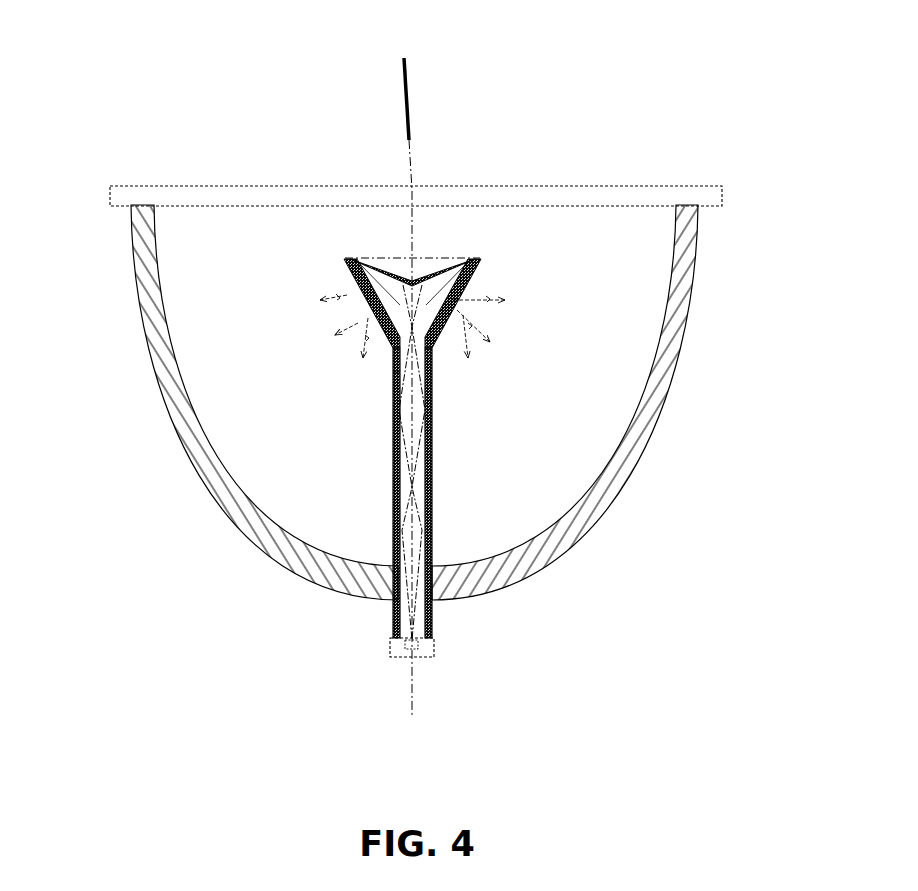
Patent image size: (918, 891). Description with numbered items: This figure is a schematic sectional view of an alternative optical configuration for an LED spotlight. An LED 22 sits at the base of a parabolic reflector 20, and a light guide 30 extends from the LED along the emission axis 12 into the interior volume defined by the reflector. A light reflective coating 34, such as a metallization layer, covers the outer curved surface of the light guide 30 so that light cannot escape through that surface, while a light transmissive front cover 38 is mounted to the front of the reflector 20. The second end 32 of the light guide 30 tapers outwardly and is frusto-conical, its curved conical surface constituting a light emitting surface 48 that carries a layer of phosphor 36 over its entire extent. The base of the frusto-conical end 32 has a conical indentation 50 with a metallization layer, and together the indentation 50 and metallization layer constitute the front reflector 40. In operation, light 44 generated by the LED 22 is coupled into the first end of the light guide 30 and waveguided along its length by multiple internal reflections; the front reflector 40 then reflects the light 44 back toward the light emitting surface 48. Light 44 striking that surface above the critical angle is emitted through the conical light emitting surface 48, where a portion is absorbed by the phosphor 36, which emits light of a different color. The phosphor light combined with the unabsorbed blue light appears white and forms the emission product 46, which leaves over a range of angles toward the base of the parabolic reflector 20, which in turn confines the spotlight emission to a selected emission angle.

The emission axis 12 is at (405, 366).
The parabolic reflector 20 is at (636, 448).
The LED 22 is at (423, 646).
The light guide 30 is at (400, 563).
The second (light emitting) end 32 is at (407, 312).
The light reflective coating 34 is at (395, 372).
The phosphor 36 is at (355, 285).
The front cover 38 is at (660, 187).
The front reflector 40 is at (386, 296).
The light 44 is at (405, 453).
The emission product 46 is at (343, 328).
The light emitting surface 48 is at (368, 278).
The conical indentation 50 is at (407, 256).